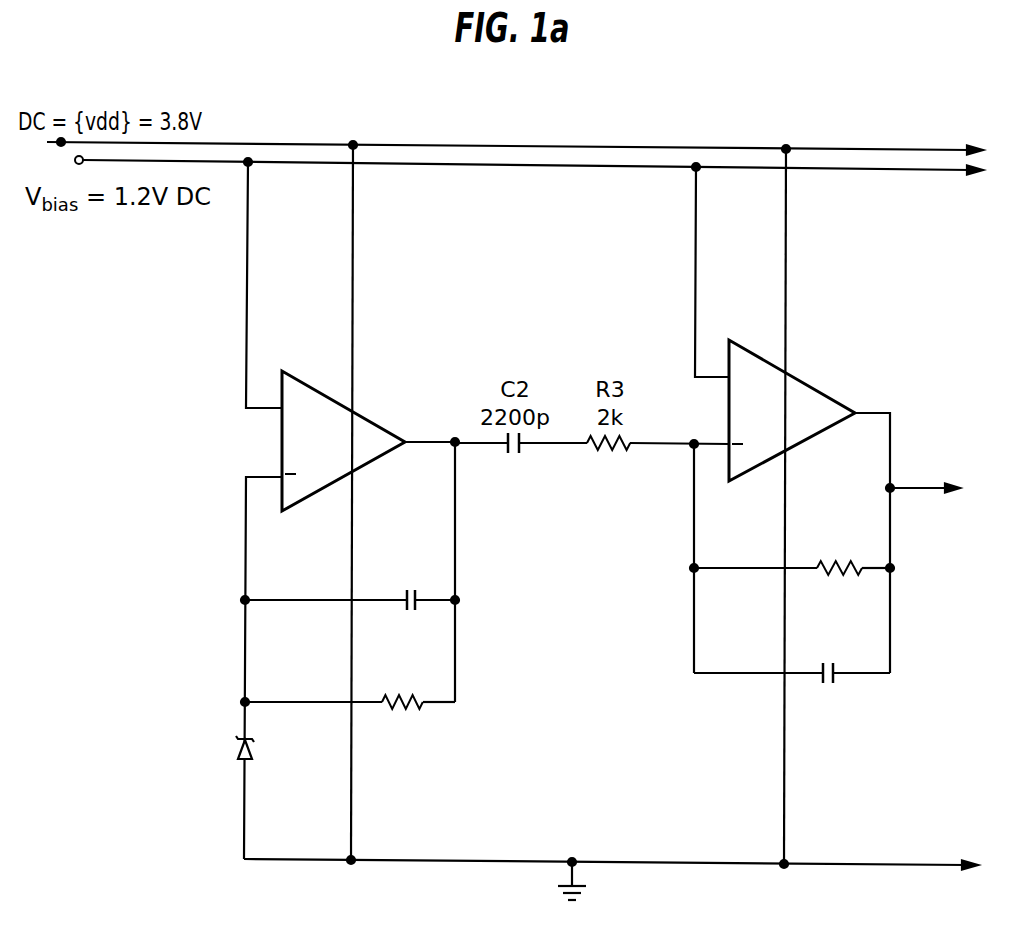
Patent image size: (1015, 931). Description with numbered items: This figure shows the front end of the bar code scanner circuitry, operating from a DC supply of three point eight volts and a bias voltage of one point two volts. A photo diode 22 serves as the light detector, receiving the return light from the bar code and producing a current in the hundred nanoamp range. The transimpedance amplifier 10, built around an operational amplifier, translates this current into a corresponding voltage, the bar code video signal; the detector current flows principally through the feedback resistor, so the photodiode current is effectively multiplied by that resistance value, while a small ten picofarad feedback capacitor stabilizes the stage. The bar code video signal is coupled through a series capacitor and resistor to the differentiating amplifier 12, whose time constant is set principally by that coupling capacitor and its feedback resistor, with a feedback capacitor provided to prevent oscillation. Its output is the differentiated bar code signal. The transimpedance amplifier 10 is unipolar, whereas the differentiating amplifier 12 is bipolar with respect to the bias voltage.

The transimpedance amplifier 10 is at (364, 324).
The differentiating amplifier 12 is at (813, 292).
The photo diode 22 is at (235, 753).